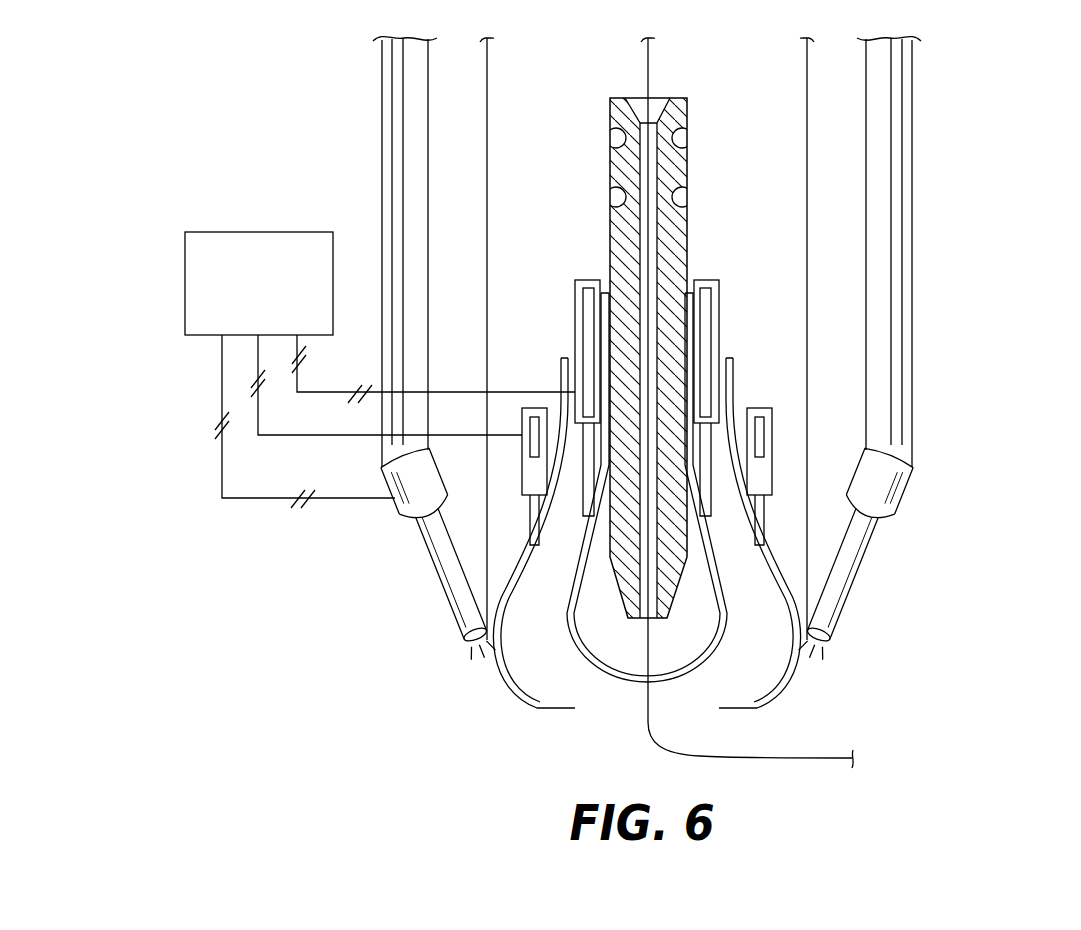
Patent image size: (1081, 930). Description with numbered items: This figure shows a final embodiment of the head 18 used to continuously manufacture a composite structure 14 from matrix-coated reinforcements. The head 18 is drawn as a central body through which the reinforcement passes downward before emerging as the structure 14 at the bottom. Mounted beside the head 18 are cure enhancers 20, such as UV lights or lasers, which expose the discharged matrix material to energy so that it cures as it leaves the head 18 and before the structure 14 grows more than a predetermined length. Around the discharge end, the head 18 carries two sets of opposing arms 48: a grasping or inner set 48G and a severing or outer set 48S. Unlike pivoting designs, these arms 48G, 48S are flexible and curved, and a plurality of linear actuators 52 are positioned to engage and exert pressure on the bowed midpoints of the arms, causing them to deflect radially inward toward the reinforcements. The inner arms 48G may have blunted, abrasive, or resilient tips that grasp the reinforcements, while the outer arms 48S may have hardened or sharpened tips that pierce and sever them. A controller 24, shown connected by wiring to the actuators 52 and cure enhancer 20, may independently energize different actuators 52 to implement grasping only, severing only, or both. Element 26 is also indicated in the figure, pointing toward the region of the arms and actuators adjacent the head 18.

The composite structure 14 is at (813, 757).
The head 18 is at (967, 128).
The cure enhancer 20 is at (470, 655).
The controller 24 is at (248, 306).
The contact tip assembly 26 is at (740, 333).
The arms 48 is at (645, 538).
The grasping arms 48G is at (610, 679).
The severing arms 48S is at (535, 705).
The linear actuators 52 is at (585, 328).